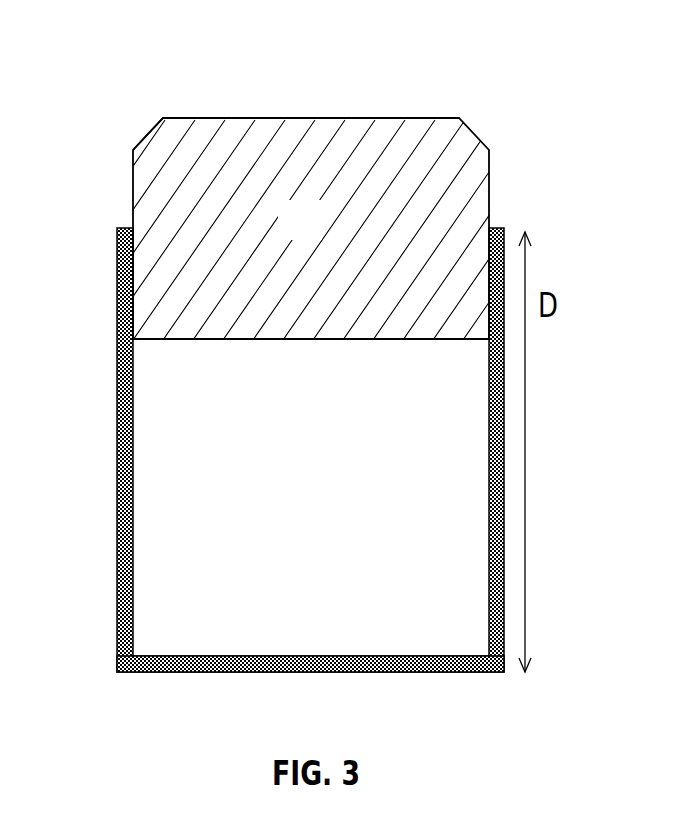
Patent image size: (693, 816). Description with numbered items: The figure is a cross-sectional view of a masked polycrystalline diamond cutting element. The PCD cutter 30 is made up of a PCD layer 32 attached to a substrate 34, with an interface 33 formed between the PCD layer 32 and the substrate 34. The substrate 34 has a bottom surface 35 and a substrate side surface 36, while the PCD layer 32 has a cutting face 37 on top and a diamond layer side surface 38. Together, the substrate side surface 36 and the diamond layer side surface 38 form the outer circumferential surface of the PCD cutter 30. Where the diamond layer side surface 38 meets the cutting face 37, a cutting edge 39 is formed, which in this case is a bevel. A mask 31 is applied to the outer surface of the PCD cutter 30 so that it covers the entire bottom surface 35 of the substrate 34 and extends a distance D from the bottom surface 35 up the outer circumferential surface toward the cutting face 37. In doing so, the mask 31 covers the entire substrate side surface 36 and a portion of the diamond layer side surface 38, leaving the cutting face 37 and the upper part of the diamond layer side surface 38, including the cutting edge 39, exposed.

The PCD cutter 30 is at (538, 82).
The mask 31 is at (503, 527).
The PCD layer 32 is at (282, 235).
The interface 33 is at (395, 340).
The substrate 34 is at (287, 449).
The bottom surface 35 is at (422, 672).
The substrate side surface 36 is at (107, 343).
The cutting face 37 is at (322, 117).
The diamond layer side surface 38 is at (107, 138).
The cutting edge 39 is at (152, 130).